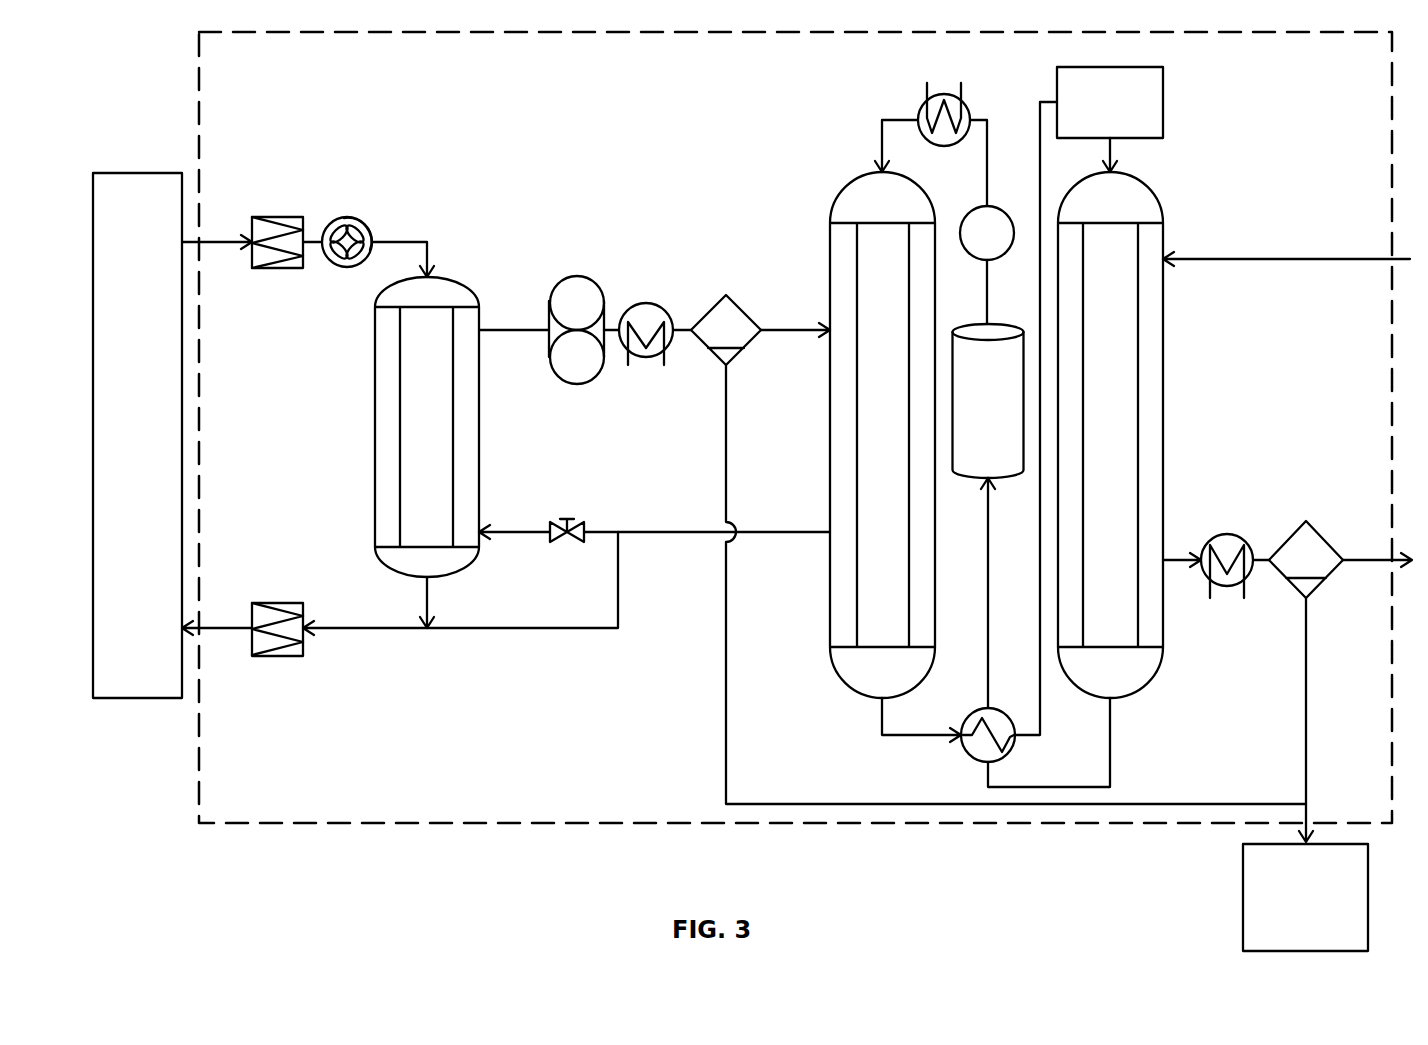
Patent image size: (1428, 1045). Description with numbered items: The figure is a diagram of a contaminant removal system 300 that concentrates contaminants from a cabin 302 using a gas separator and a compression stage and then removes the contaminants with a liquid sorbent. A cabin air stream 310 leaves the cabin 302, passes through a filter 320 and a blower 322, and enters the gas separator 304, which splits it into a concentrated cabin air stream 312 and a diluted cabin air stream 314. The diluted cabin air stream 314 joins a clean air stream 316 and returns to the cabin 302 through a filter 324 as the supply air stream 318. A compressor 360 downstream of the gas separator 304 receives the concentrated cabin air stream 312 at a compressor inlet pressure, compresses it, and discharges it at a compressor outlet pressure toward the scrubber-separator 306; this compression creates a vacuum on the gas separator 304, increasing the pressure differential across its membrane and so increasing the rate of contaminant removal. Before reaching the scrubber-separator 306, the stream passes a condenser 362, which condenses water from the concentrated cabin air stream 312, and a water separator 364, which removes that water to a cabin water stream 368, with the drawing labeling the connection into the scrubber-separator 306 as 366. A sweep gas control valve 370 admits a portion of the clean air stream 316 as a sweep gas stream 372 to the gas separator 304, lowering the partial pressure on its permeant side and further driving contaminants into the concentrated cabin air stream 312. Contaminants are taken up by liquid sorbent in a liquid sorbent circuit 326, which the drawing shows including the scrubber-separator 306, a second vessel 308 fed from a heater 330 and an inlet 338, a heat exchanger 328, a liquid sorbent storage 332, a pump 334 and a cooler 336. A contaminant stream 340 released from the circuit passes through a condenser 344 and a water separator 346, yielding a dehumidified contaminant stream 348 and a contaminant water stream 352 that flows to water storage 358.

The contaminant removal system 300 is at (795, 427).
The cabin 302 is at (137, 435).
The gas separator 304 is at (427, 427).
The scrubber-separator 306 is at (882, 435).
The third sorbent bed 308 is at (1110, 435).
The cabin air stream 310 is at (212, 242).
The concentrated cabin air stream 312 is at (510, 330).
The diluted cabin air stream 314 is at (425, 605).
The clean air stream 316 is at (467, 630).
The supply air stream 318 is at (212, 628).
The filter 320 is at (262, 217).
The blower 322 is at (347, 217).
The filter 324 is at (262, 603).
The liquid sorbent circuit 326 is at (1165, 154).
The heat exchanger 328 is at (976, 758).
The heater 330 is at (1089, 401).
The liquid sorbent storage 332 is at (988, 516).
The pump 334 is at (987, 265).
The cooler 336 is at (963, 102).
The purge gas inlet line 338 is at (1268, 259).
The contaminant stream 340 is at (1181, 562).
The condenser 344 is at (1227, 534).
The water separator 346 is at (1313, 528).
The dehumidified contaminant stream 348 is at (1361, 562).
The contaminant water stream 352 is at (1308, 697).
The water storage 358 is at (1305, 897).
The compressor 360 is at (577, 276).
The condenser 362 is at (646, 303).
The water separator 364 is at (732, 301).
The second bed inlet line 366 is at (773, 333).
The cabin water stream 368 is at (729, 447).
The sweep gas control valve 370 is at (584, 525).
The sweep gas stream 372 is at (497, 531).